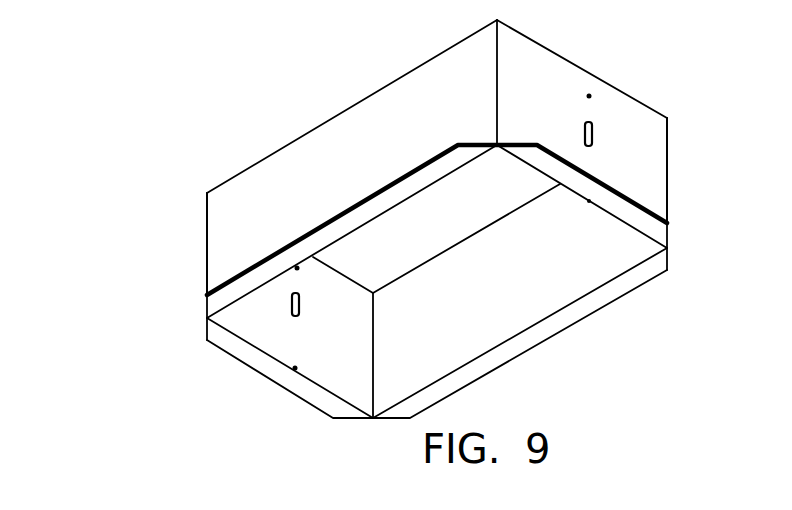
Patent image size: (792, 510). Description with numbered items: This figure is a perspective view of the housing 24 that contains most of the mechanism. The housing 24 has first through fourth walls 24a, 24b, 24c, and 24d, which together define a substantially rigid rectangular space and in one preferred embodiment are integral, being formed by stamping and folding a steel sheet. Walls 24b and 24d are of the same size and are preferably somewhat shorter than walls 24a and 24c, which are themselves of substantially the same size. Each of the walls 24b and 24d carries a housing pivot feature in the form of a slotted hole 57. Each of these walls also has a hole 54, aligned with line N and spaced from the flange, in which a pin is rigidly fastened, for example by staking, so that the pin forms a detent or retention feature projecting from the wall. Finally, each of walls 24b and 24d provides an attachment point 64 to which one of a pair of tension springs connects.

The housing 24 is at (664, 277).
The first wall 24a is at (328, 163).
The second wall 24b is at (328, 360).
The third wall 24c is at (588, 240).
The fourth wall 24d is at (620, 170).
The hole 54 is at (590, 95).
The slotted hole 57 is at (597, 135).
The attachment point 64 is at (588, 200).